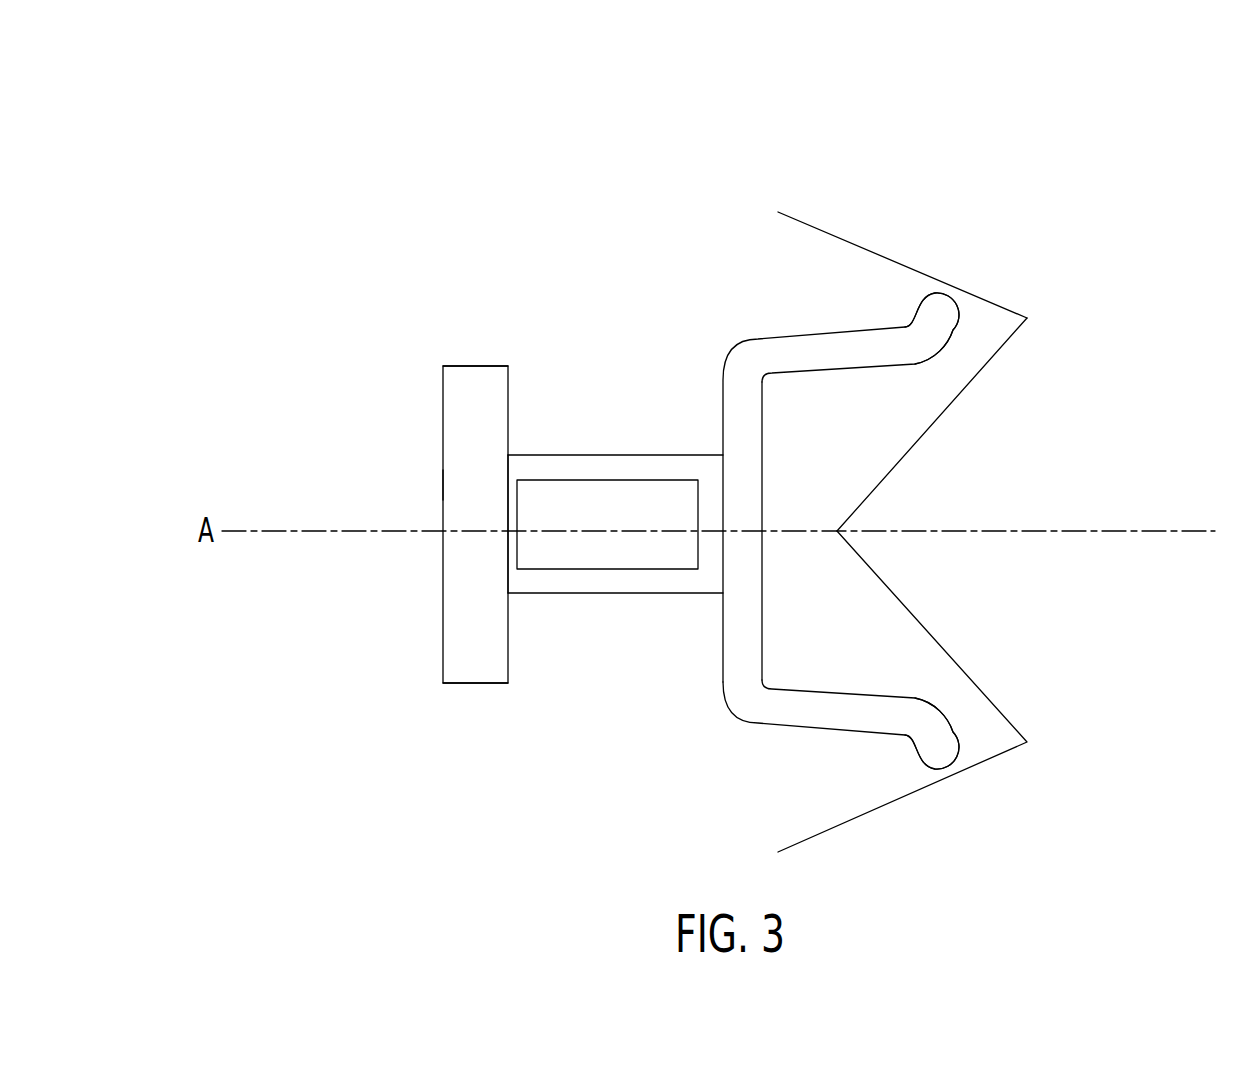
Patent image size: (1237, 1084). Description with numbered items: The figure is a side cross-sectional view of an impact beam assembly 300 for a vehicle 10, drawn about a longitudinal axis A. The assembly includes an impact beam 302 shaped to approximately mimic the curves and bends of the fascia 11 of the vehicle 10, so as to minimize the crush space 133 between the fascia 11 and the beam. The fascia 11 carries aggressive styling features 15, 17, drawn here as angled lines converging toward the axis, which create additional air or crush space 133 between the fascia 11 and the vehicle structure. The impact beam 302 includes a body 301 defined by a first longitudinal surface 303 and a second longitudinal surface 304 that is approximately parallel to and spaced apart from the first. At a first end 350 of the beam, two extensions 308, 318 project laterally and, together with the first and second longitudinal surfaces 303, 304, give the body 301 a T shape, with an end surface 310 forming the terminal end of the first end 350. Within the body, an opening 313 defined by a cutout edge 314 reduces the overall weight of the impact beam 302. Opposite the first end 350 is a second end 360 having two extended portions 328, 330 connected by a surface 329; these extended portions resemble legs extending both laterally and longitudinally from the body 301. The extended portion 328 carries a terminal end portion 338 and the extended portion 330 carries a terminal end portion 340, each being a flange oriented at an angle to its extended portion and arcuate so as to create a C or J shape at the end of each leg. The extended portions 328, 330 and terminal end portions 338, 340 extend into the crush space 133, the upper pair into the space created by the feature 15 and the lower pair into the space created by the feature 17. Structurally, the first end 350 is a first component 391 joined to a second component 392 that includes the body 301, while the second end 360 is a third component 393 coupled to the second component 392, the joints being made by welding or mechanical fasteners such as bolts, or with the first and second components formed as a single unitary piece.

The vehicle 10 is at (1093, 197).
The fascia 11 is at (862, 243).
The feature 15 is at (1027, 318).
The feature 17 is at (1027, 742).
The crush space 133 is at (902, 408).
The impact beam assembly 300 is at (257, 220).
The body 301 is at (452, 485).
The impact beam 302 is at (533, 360).
The first longitudinal surface 303 is at (572, 455).
The second longitudinal surface 304 is at (555, 593).
The extension 308 is at (453, 367).
The end surface 310 is at (442, 440).
The opening 313 is at (552, 555).
The cutout edge 314 is at (622, 570).
The extension 318 is at (475, 683).
The extended portion 328 is at (758, 352).
The surface 329 is at (762, 433).
The extended portion 330 is at (768, 702).
The terminal end portion 338 is at (938, 312).
The terminal end portion 340 is at (942, 758).
The first end 350 is at (400, 380).
The second end 360 is at (982, 238).
The first component 391 is at (478, 253).
The second component 392 is at (612, 310).
The third component 393 is at (927, 137).